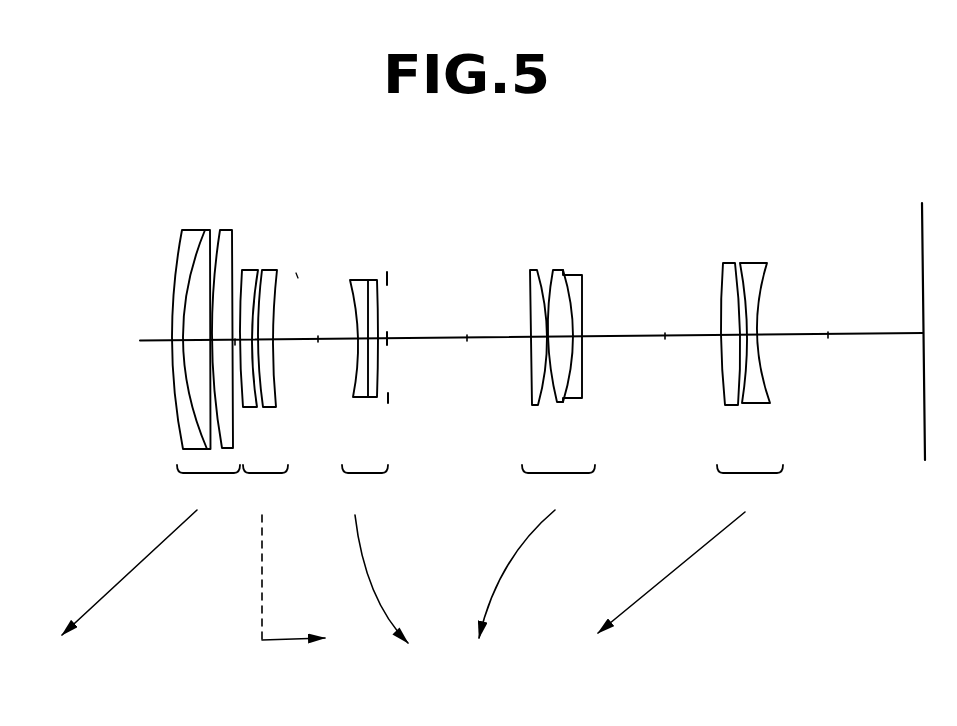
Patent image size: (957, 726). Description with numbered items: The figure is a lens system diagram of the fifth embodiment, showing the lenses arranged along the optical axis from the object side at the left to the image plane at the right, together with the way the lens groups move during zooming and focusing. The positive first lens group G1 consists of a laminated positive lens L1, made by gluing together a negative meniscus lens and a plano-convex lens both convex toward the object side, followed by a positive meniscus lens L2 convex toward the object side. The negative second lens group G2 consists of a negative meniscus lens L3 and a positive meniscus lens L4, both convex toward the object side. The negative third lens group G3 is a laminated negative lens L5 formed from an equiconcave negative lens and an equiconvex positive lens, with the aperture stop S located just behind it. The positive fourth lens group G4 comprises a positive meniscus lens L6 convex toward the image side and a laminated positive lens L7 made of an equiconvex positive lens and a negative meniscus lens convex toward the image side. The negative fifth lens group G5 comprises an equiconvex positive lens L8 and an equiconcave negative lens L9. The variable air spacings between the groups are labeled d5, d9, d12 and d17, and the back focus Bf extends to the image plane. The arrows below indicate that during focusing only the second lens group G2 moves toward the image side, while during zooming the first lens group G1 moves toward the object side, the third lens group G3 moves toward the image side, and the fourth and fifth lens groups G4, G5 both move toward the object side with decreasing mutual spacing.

The laminated positive lens L1 is at (209, 229).
The positive meniscus lens L2 is at (230, 228).
The negative meniscus lens L3 is at (250, 268).
The positive meniscus lens L4 is at (275, 270).
The laminated negative lens L5 is at (368, 280).
The aperture stop S is at (387, 272).
The positive meniscus lens L6 is at (535, 268).
The laminated positive lens L7 is at (582, 275).
The equiconvex positive lens L8 is at (730, 263).
The equiconcave negative lens L9 is at (760, 263).
The first lens group G1 is at (154, 397).
The second lens group G2 is at (291, 416).
The third lens group G3 is at (375, 401).
The fourth lens group G4 is at (537, 398).
The fifth lens group G5 is at (694, 395).
The lens surface spacing d5 is at (235, 345).
The lens surface spacing d9 is at (318, 342).
The lens surface spacing d12 is at (467, 341).
The lens surface spacing d17 is at (665, 339).
The back focus Bf is at (828, 338).